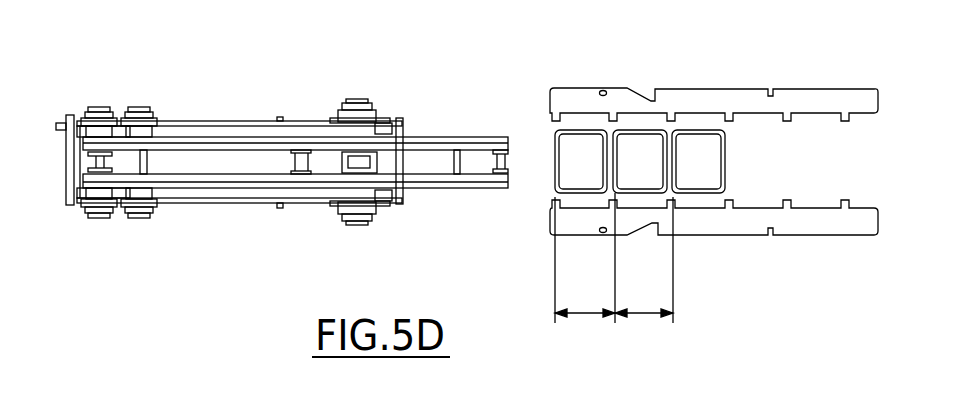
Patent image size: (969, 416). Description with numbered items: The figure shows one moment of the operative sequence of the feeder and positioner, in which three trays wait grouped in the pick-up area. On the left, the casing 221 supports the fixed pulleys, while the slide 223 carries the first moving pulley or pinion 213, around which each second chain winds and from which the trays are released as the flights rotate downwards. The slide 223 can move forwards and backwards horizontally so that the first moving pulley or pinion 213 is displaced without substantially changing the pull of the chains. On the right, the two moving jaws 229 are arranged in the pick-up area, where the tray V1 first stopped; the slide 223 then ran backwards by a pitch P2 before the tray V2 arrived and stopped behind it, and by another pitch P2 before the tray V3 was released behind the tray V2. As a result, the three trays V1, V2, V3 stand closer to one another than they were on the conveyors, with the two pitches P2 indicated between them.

The casing 221 is at (196, 112).
The slide 223 is at (424, 137).
The first moving pulley or pinion 213 is at (510, 163).
The moving jaw 229 is at (808, 88).
The tray V1 is at (698, 157).
The tray V2 is at (639, 163).
The tray V3 is at (579, 160).
The pitch P2 is at (590, 316).